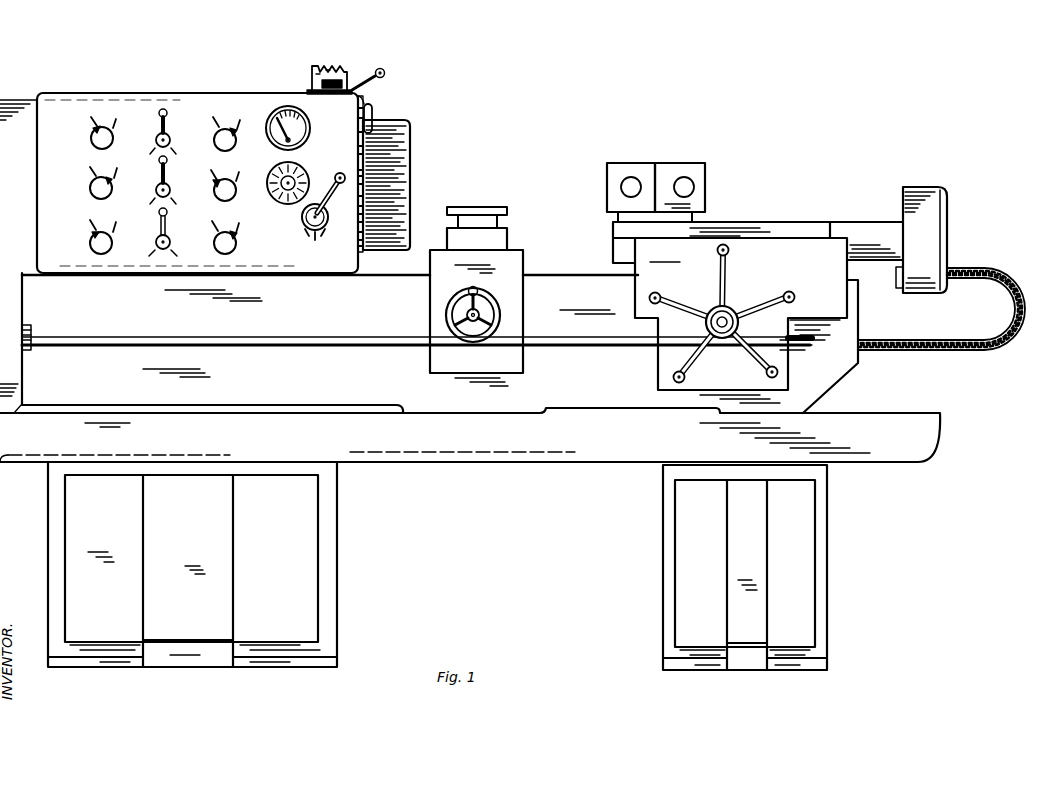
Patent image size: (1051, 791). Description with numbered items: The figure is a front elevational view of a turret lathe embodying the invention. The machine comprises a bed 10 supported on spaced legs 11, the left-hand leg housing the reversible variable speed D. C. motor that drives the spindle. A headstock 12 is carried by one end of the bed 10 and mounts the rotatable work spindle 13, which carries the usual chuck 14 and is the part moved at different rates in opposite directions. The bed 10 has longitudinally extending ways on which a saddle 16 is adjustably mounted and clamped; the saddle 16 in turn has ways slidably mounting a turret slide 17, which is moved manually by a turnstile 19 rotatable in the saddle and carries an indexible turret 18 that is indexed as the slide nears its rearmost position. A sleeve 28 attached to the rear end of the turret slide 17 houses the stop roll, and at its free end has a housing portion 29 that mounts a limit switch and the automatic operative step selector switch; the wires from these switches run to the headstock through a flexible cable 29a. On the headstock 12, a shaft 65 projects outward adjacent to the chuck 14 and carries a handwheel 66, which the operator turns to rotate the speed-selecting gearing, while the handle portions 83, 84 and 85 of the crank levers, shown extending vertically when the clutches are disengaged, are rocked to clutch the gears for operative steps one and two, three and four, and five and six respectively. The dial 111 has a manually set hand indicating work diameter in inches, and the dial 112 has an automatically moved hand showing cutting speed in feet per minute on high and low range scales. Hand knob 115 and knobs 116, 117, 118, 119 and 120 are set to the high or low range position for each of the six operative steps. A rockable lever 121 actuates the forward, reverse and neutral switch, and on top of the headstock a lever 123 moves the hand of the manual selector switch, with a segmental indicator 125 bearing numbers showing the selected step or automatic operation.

The bed 10 is at (576, 385).
The legs 11 is at (294, 578).
The headstock 12 is at (140, 98).
The work spindle 13 is at (362, 168).
The chuck 14 is at (410, 134).
The saddle 16 is at (840, 300).
The turret slide 17 is at (790, 230).
The indexible turret 18 is at (706, 190).
The turnstile 19 is at (742, 306).
The sleeve 28 is at (862, 224).
The housing portion 29 is at (942, 190).
The flexible cable 29a is at (906, 340).
The shaft 65 is at (365, 104).
The handwheel 66 is at (375, 106).
The handle portion 83 is at (169, 123).
The handle portion 84 is at (169, 174).
The handle portion 85 is at (169, 227).
The dial 111 is at (298, 166).
The dial 112 is at (305, 138).
The hand knob 115 is at (111, 135).
The knob 116 is at (112, 187).
The knob 117 is at (104, 254).
The knob 118 is at (235, 147).
The knob 119 is at (235, 194).
The knob 120 is at (235, 247).
The rockable lever 121 is at (329, 207).
The lever 123 is at (364, 74).
The segmental indicator 125 is at (312, 76).